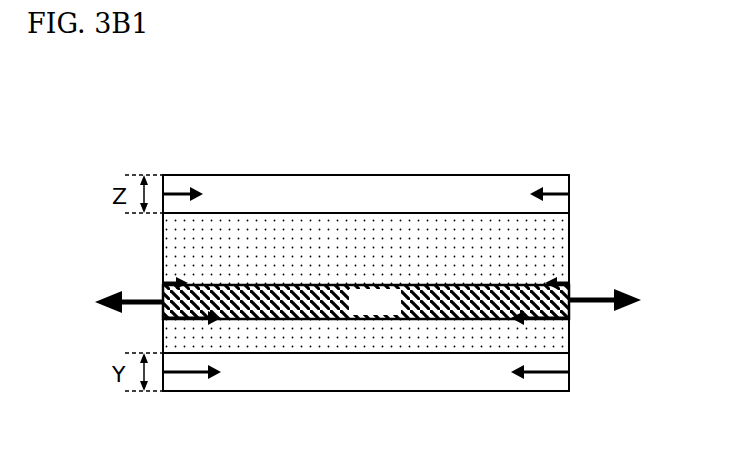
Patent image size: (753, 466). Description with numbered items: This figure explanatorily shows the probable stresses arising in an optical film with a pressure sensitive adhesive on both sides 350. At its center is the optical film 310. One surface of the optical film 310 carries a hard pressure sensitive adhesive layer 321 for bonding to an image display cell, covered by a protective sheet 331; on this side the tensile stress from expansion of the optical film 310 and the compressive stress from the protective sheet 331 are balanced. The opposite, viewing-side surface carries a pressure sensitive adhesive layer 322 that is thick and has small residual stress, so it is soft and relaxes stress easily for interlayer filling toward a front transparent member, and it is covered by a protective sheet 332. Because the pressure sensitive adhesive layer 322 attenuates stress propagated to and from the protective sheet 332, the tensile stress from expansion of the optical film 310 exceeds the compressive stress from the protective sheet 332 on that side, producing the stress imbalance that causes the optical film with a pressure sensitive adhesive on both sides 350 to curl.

The optical film with a pressure sensitive adhesive on both sides 350 is at (522, 128).
The protective sheet 332 is at (362, 182).
The pressure sensitive adhesive layer 322 is at (558, 249).
The optical film 310 is at (368, 301).
The hard pressure sensitive adhesive layer 321 is at (558, 336).
The protective sheet 331 is at (378, 380).